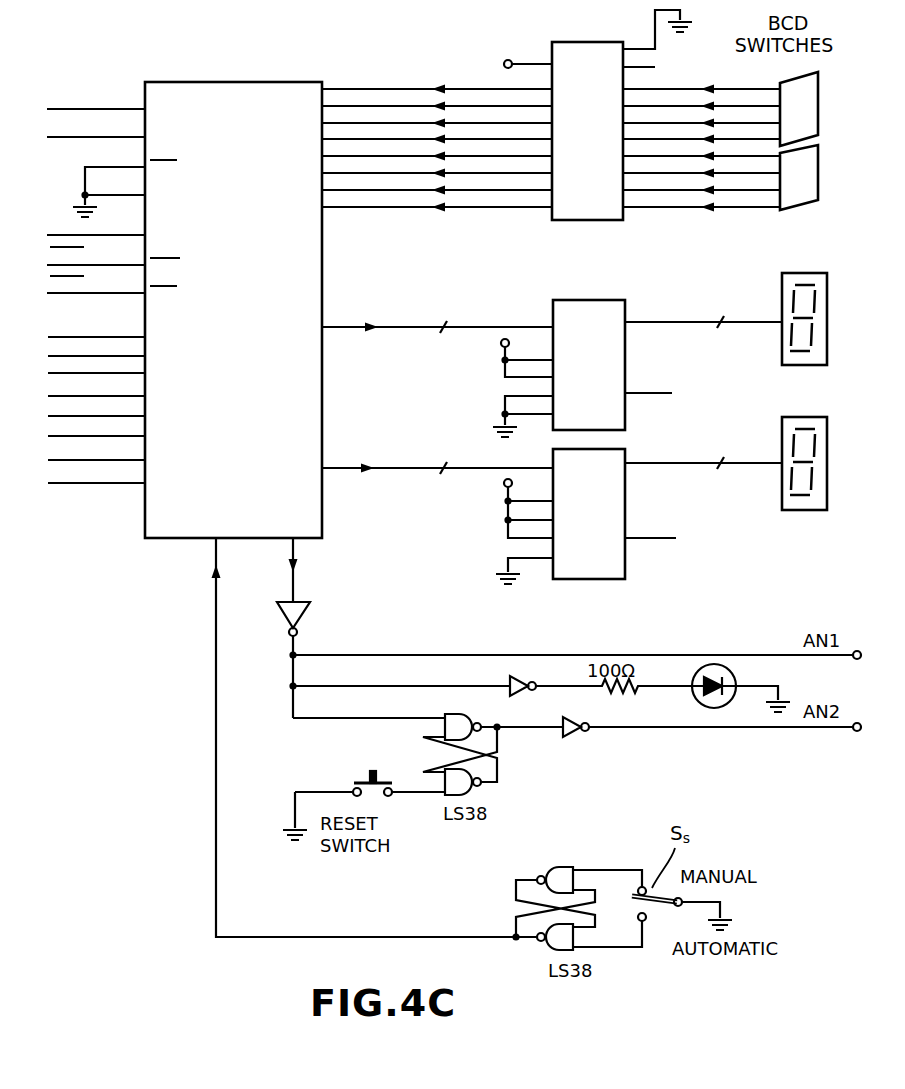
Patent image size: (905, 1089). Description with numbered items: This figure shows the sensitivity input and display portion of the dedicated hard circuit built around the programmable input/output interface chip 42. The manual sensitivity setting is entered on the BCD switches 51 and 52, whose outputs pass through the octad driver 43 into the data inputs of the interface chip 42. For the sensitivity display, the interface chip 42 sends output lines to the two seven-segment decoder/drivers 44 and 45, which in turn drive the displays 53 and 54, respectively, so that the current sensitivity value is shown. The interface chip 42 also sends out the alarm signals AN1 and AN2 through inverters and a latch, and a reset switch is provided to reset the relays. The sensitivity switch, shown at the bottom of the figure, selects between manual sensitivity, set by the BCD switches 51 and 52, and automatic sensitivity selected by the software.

The programmable input/output interface chip 42 is at (232, 82).
The octad driver 43 is at (572, 42).
The 7 segment decoder/driver 44 is at (602, 292).
The 7 segment decoder/driver 45 is at (612, 579).
The BCD switch 51 is at (822, 98).
The BCD switch 52 is at (822, 166).
The display 53 is at (828, 311).
The display 54 is at (828, 441).